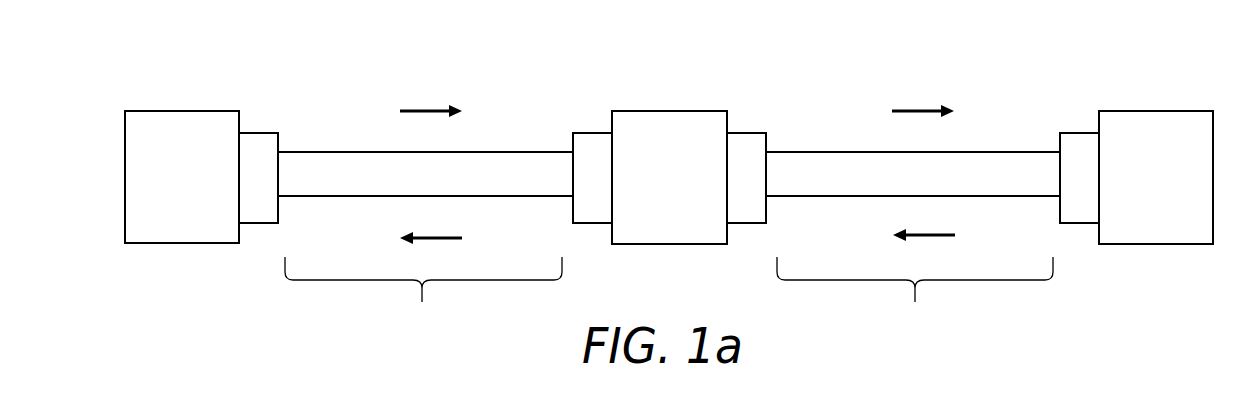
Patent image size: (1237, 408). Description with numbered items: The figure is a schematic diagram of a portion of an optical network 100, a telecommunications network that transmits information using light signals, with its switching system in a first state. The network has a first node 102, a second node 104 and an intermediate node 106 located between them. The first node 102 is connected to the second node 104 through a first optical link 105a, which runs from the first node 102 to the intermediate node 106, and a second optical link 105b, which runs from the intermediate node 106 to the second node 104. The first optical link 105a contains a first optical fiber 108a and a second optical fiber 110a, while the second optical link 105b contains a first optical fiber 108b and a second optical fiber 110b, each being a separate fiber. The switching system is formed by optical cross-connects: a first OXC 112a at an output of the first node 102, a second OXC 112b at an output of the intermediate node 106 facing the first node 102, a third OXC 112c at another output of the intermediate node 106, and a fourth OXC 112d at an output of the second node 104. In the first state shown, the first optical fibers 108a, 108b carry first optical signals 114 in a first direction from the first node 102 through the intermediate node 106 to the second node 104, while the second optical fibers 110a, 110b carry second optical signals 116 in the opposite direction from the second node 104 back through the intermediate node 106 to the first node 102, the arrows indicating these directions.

The optical network 100 is at (333, 69).
The first node 102 is at (202, 192).
The second node 104 is at (1176, 194).
The intermediate node 106 is at (689, 193).
The first optical link 105a is at (423, 297).
The second optical link 105b is at (915, 297).
The first optical fiber 108a is at (392, 152).
The first optical fiber 108b is at (883, 152).
The second optical fiber 110a is at (388, 197).
The second optical fiber 110b is at (880, 197).
The first optical cross-connect 112a is at (253, 133).
The second optical cross-connect 112b is at (592, 133).
The third optical cross-connect 112c is at (745, 133).
The fourth optical cross-connect 112d is at (1081, 133).
The first optical signals 114 is at (426, 108).
The second optical signals 116 is at (433, 240).